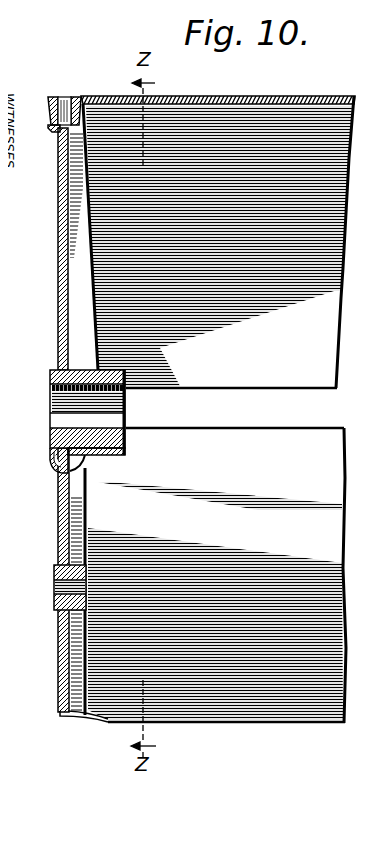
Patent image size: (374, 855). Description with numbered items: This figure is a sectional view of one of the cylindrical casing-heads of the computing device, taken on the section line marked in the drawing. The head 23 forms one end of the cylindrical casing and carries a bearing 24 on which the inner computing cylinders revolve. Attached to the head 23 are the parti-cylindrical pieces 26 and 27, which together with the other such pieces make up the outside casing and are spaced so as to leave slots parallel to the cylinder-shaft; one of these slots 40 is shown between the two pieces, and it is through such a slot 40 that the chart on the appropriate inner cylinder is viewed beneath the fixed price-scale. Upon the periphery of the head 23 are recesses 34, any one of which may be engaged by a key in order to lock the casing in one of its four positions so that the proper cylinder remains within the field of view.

The head 23 is at (50, 292).
The bearing 24 is at (46, 580).
The parti-cylindrical piece 26 is at (316, 222).
The parti-cylindrical piece 27 is at (203, 575).
The recess 34 is at (57, 96).
The slot 40 is at (153, 412).